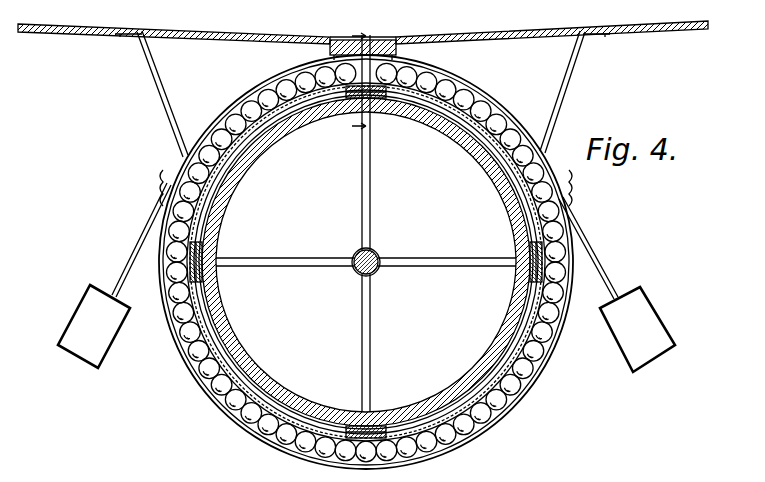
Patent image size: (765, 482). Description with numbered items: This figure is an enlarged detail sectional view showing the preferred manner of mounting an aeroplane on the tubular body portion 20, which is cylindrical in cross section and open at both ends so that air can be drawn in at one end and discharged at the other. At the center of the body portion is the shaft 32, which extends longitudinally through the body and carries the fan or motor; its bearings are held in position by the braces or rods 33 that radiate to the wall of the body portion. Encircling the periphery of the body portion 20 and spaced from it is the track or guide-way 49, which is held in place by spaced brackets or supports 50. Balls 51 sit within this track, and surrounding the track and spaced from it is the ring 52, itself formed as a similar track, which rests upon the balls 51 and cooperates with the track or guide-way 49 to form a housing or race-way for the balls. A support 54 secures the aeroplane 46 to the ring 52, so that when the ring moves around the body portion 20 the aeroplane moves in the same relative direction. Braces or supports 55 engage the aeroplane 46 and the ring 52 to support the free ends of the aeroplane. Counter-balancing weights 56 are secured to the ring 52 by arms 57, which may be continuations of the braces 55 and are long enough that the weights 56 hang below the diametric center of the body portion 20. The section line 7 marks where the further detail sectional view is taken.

The section line 7 is at (354, 83).
The tubular body portion 20 is at (506, 172).
The shaft 32 is at (358, 270).
The braces or rods 33 is at (358, 238).
The aeroplane 46 is at (363, 23).
The track or guide-way 49 is at (448, 106).
The brackets or supports 50 is at (374, 96).
The balls 51 is at (236, 118).
The ring 52 is at (546, 352).
The support 54 is at (398, 46).
The braces or supports 55 is at (166, 98).
The counter-balancing weights 56 is at (84, 312).
The arms 57 is at (148, 226).